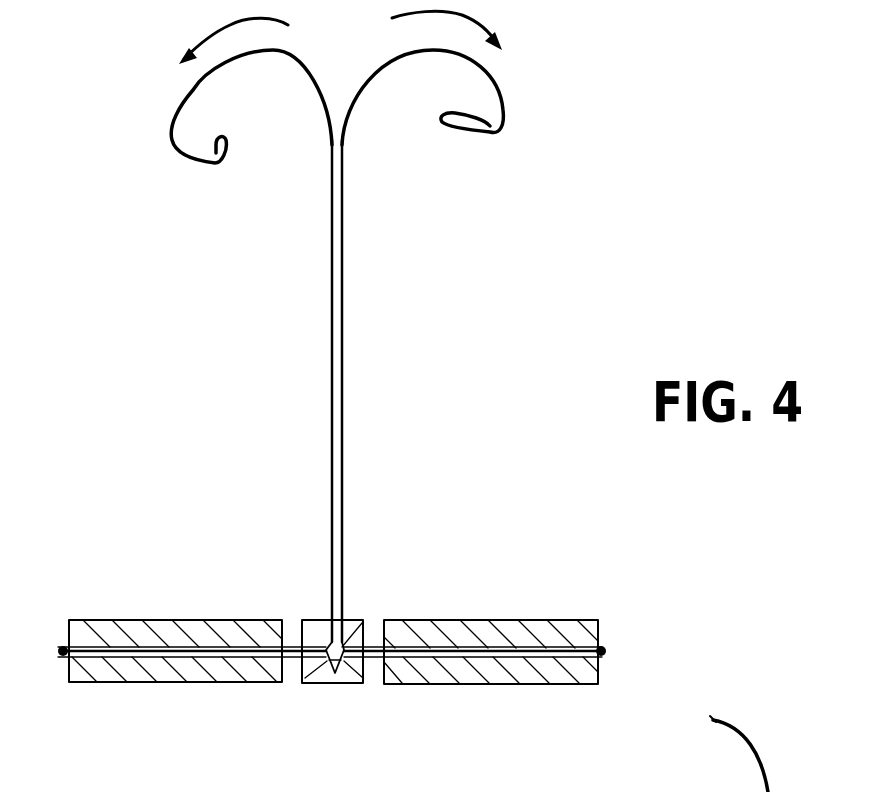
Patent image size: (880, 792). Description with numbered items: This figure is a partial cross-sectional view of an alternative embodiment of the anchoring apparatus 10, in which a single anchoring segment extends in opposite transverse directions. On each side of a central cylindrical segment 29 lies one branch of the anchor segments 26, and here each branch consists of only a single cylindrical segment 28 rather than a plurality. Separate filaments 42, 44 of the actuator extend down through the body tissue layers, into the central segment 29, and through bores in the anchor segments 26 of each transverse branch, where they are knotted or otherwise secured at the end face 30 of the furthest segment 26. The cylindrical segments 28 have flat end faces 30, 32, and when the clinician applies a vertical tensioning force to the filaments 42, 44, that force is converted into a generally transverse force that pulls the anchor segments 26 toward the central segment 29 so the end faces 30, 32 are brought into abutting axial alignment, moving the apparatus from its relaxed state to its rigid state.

The anchoring apparatus 10 is at (311, 342).
The anchor segments 26 is at (323, 648).
The cylindrical segments 28 is at (90, 672).
The central cylindrical segment 29 is at (342, 683).
The end face 30 is at (68, 631).
The end face 32 is at (283, 676).
The filament 42 is at (478, 70).
The filament 44 is at (195, 90).